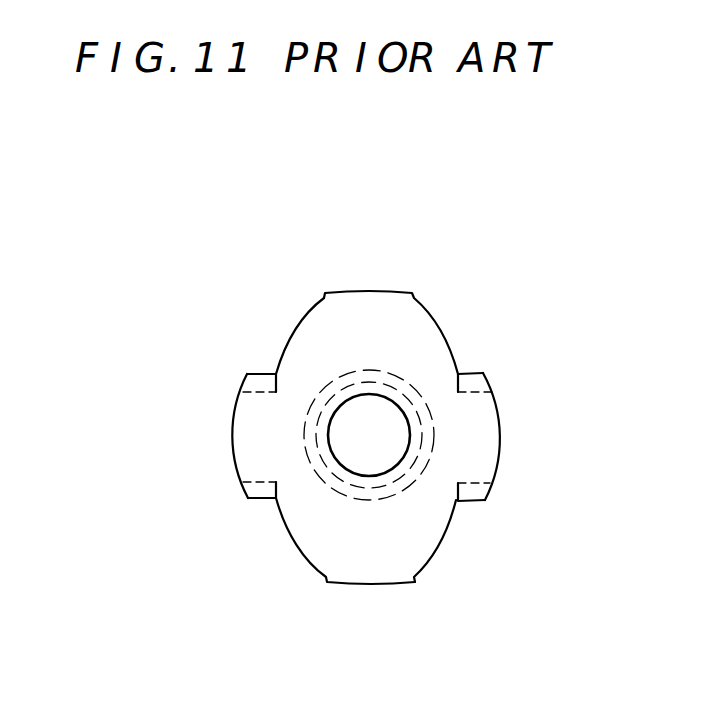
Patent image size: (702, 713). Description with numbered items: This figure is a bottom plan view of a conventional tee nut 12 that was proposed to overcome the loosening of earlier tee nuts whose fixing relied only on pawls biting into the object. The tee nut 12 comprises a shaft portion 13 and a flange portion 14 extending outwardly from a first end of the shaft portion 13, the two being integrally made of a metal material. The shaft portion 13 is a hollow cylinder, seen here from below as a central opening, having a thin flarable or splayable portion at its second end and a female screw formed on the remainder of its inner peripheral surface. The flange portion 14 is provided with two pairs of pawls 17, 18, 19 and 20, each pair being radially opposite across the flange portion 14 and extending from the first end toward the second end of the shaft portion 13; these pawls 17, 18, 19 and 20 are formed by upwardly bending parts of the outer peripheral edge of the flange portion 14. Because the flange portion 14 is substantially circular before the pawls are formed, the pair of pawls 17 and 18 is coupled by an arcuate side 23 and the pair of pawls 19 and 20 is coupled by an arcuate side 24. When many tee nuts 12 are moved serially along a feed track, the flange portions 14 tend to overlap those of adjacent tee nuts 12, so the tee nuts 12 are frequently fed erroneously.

The tee nut 12 is at (243, 265).
The shaft portion 13 is at (397, 373).
The flange portion 14 is at (423, 543).
The pawl 17 is at (260, 498).
The pawl 18 is at (265, 380).
The pawl 19 is at (473, 500).
The pawl 20 is at (472, 383).
The arcuate side 23 is at (233, 434).
The arcuate side 24 is at (502, 425).